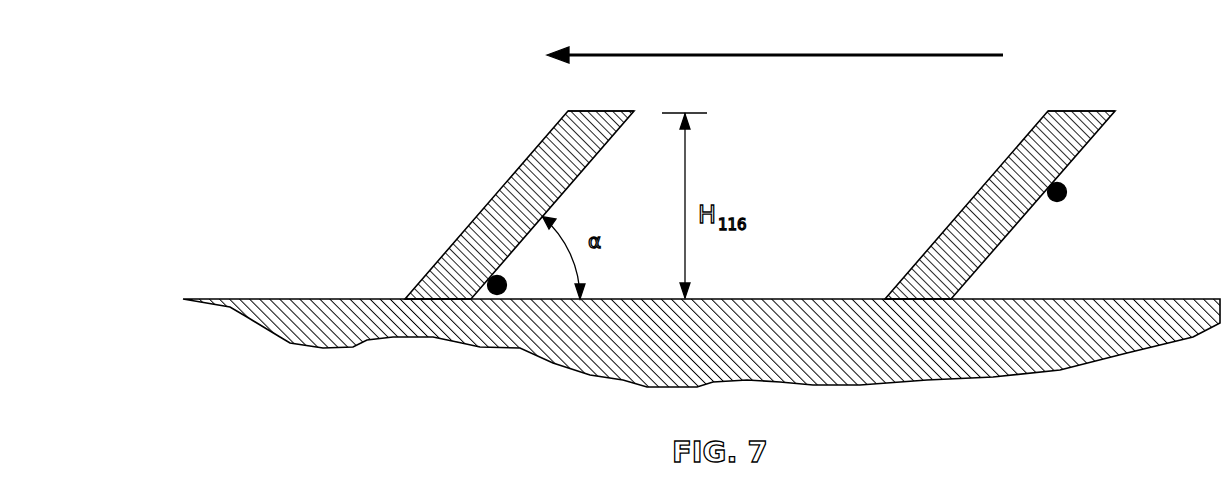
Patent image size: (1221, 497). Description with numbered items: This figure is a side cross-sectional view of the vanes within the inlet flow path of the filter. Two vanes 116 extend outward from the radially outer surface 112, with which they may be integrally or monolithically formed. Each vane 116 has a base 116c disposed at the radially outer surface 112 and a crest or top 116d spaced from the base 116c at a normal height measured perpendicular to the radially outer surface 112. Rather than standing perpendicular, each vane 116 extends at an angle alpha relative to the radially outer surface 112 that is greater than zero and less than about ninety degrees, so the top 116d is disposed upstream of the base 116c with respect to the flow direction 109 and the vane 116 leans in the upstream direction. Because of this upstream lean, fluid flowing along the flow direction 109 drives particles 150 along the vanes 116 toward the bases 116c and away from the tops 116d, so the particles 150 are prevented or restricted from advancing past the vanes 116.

The flow direction 109 is at (707, 55).
The radially outer surface 112 is at (262, 298).
The vane 116 is at (482, 182).
The base 116c is at (396, 286).
The top 116d is at (562, 102).
The particles 150 is at (503, 280).